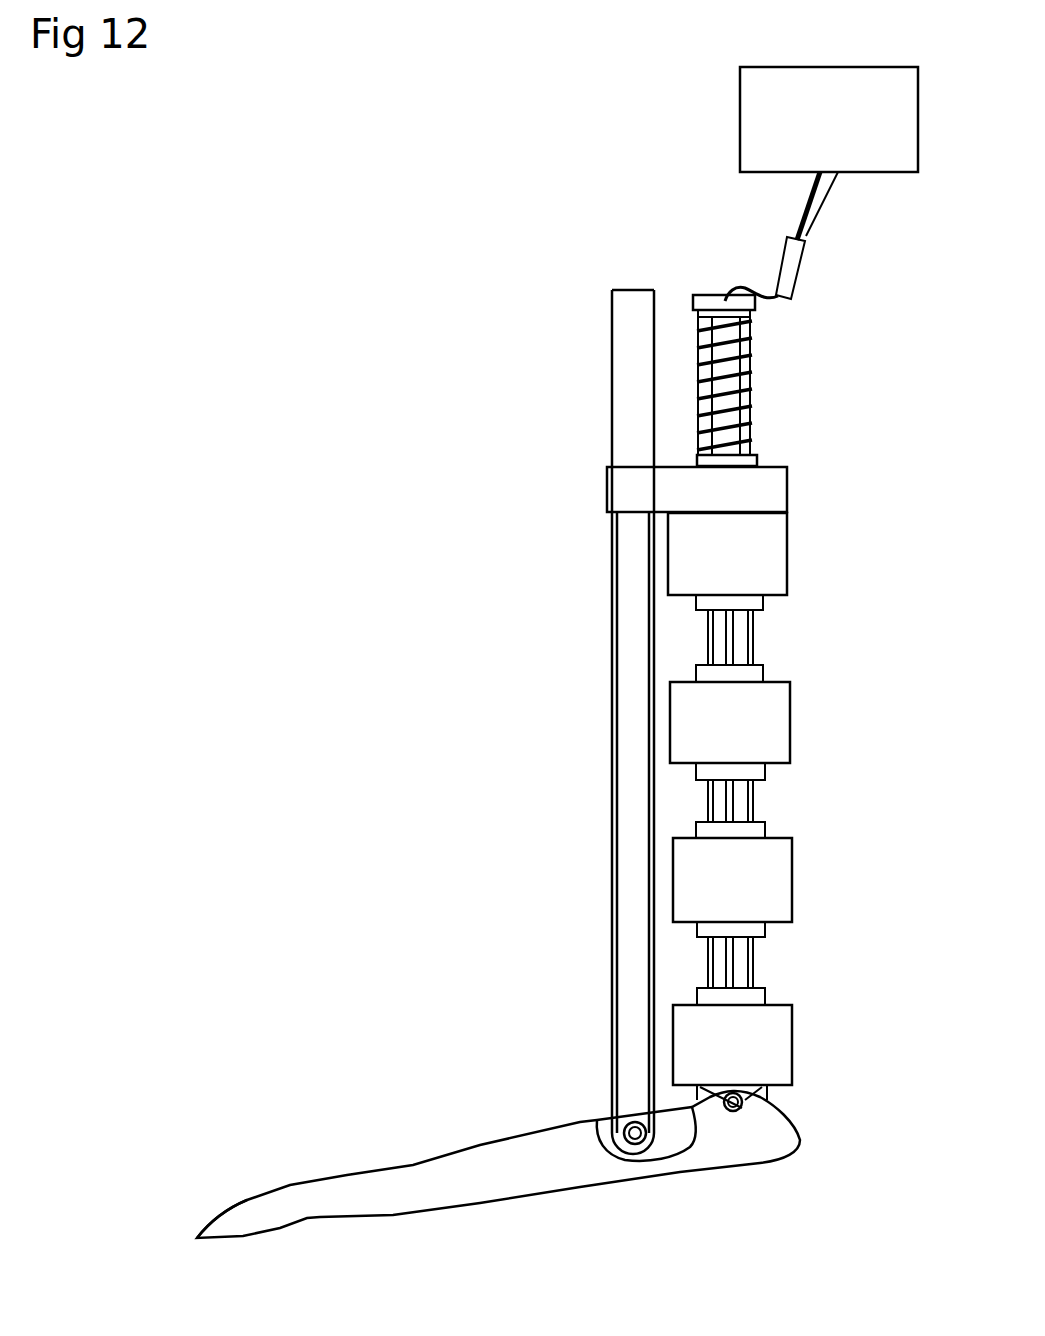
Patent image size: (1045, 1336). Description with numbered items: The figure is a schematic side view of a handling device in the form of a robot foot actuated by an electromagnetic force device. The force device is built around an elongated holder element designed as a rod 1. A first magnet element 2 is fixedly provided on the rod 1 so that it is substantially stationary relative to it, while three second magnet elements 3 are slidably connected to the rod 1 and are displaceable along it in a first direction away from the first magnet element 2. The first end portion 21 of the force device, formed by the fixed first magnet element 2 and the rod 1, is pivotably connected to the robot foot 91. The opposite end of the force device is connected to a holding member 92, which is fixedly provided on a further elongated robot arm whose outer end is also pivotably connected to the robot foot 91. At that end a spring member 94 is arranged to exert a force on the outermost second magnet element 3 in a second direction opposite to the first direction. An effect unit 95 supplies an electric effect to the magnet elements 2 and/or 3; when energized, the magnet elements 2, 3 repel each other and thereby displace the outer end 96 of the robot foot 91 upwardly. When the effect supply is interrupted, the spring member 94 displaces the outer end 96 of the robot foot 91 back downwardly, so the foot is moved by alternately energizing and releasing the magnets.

The rod 1 is at (718, 643).
The first magnet element 2 is at (700, 1048).
The second magnet elements 3 is at (707, 558).
The first end portion 21 is at (688, 1085).
The robot foot 91 is at (453, 1177).
The holding member 92 is at (702, 490).
The spring member 94 is at (717, 388).
The effect unit 95 is at (760, 136).
The outer end 96 is at (243, 1225).